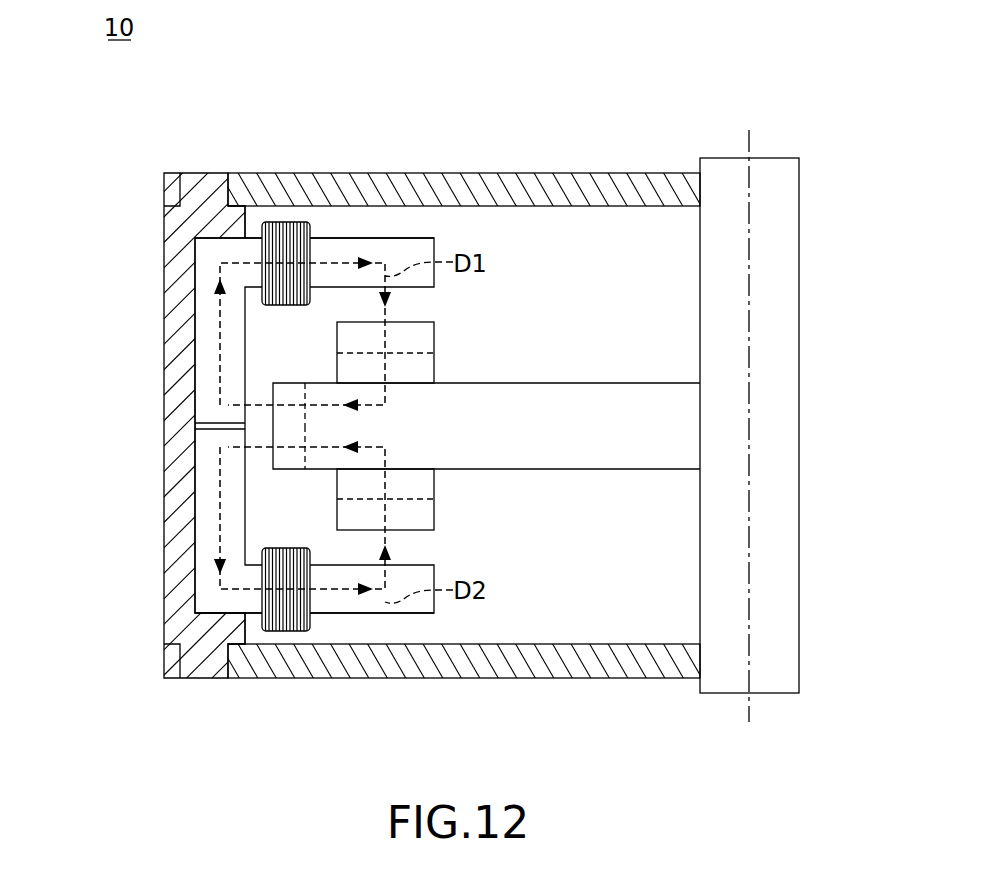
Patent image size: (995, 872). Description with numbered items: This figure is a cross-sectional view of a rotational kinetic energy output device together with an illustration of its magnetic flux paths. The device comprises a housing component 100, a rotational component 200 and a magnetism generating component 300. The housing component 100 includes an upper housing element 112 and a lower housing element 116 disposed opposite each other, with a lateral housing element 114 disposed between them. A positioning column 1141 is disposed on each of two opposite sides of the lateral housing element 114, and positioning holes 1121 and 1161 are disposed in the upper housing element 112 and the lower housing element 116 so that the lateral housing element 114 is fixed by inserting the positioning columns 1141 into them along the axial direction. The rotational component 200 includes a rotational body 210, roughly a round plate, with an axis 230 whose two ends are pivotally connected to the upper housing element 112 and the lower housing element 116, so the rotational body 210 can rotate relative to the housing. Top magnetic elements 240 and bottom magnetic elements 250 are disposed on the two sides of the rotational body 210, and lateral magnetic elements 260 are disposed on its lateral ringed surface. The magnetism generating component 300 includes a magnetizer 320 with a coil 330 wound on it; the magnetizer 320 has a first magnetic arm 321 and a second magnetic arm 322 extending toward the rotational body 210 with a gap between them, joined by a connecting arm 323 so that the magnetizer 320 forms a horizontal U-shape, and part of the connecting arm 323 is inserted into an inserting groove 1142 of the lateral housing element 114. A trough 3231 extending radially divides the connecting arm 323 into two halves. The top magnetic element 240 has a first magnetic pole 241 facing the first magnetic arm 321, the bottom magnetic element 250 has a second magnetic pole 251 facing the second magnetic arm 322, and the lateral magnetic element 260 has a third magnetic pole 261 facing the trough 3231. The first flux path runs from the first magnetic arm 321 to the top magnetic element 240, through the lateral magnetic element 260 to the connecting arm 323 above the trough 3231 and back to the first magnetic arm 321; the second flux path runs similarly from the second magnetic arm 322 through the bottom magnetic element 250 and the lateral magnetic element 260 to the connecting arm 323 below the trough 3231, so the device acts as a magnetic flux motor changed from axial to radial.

The housing component 100 is at (148, 273).
The upper housing element 112 is at (508, 173).
The positioning hole 1121 is at (222, 188).
The lateral housing element 114 is at (150, 338).
The positioning column 1141 is at (198, 182).
The inserting groove 1142 is at (205, 613).
The lower housing element 116 is at (496, 679).
The positioning hole 1161 is at (223, 668).
The rotational component 200 is at (818, 240).
The rotational body 210 is at (632, 383).
The axis 230 is at (775, 492).
The top magnetic element 240 is at (458, 360).
The first magnetic pole 241 is at (418, 333).
The bottom magnetic element 250 is at (458, 490).
The second magnetic pole 251 is at (418, 520).
The lateral magnetic element 260 is at (290, 362).
The third magnetic pole 261 is at (290, 486).
The magnetism generating component 300 is at (468, 282).
The magnetizer 320 is at (448, 618).
The first magnetic arm 321 is at (411, 243).
The second magnetic arm 322 is at (402, 613).
The connecting arm 323 is at (205, 405).
The trough 3231 is at (207, 428).
The coil 330 is at (282, 222).